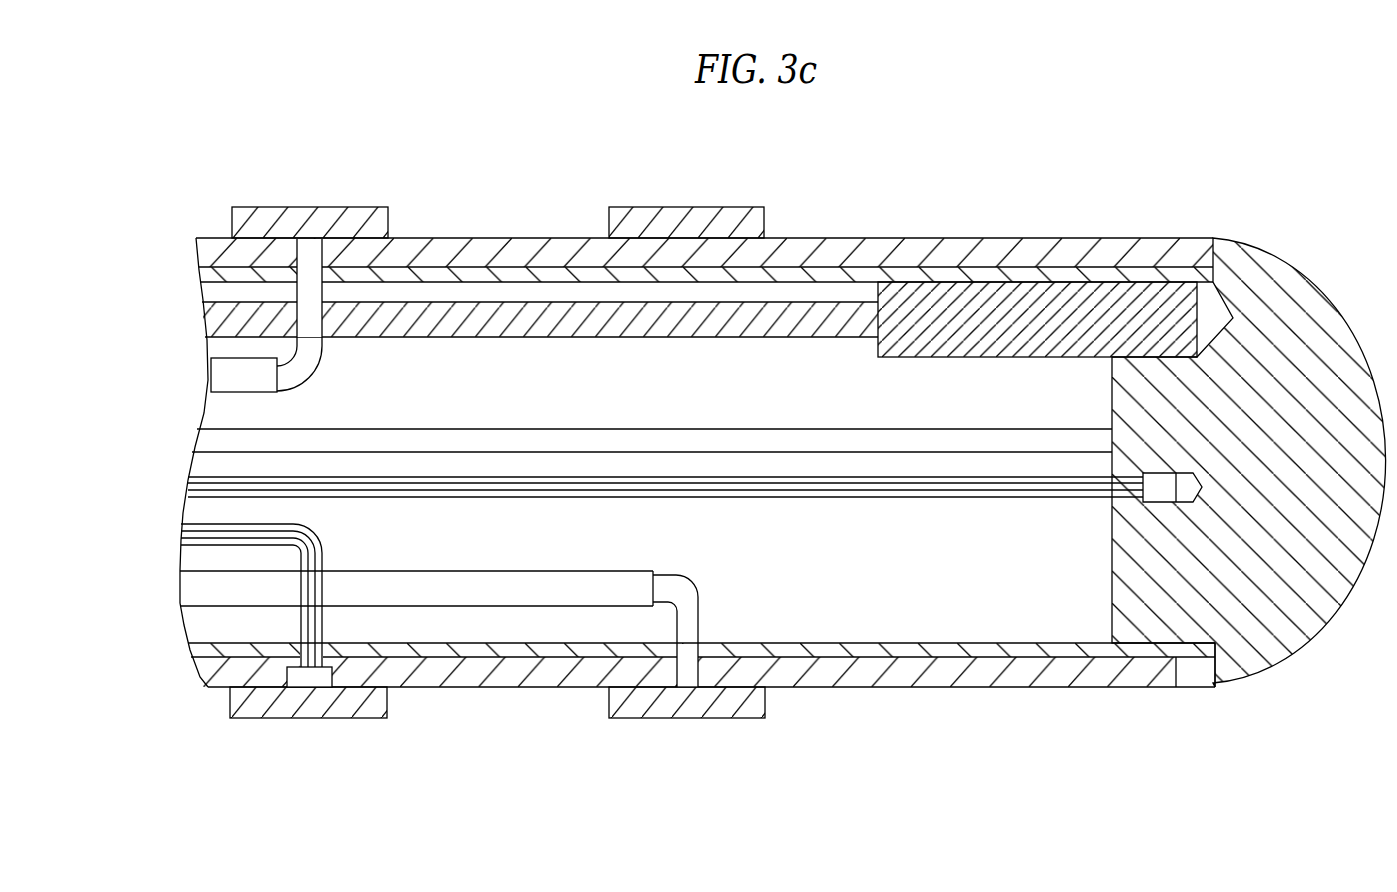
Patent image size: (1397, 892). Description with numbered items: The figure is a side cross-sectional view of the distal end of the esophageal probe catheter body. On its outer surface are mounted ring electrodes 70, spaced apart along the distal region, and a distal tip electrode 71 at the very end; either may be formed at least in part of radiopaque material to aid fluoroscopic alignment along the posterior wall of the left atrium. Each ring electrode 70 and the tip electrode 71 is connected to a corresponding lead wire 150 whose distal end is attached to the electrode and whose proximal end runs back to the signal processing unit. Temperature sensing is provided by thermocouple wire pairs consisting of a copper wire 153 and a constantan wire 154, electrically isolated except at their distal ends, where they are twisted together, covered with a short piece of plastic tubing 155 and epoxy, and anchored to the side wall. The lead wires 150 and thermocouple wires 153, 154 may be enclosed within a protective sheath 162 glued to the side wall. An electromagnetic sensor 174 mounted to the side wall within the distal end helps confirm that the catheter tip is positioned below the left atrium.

The ring electrode 70 is at (308, 205).
The distal tip electrode 71 is at (1280, 295).
The lead wire 150 is at (860, 442).
The copper wire 153 is at (193, 496).
The constantan wire 154 is at (190, 482).
The plastic tubing 155 is at (308, 675).
The protective sheath 162 is at (232, 374).
The electromagnetic sensor 174 is at (1037, 300).